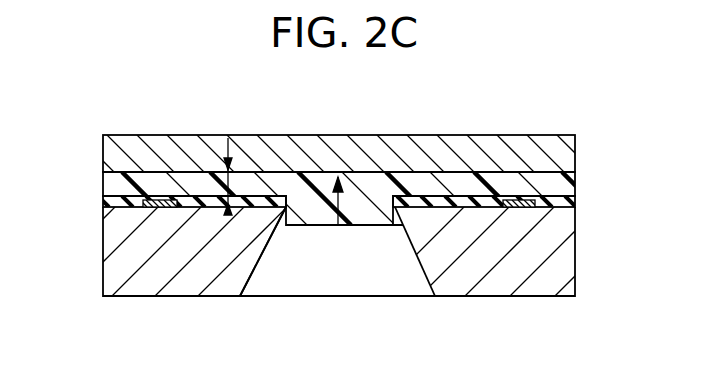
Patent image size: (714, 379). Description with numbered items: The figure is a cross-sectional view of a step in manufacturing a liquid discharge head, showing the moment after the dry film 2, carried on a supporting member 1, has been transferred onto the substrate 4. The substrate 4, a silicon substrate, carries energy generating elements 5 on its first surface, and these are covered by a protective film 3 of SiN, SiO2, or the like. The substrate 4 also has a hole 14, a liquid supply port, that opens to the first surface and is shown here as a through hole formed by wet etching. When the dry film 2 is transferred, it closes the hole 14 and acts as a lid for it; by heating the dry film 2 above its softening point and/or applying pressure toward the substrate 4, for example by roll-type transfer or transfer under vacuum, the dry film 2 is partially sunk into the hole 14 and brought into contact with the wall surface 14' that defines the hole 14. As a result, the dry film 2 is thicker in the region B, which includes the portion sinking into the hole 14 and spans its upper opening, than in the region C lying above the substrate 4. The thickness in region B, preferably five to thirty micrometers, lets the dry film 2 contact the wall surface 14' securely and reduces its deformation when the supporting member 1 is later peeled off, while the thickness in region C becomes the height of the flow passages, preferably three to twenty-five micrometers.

The supporting member 1 is at (560, 153).
The dry film 2 is at (560, 180).
The protective film 3 is at (560, 200).
The substrate 4 is at (557, 280).
The energy generating element 5 is at (525, 204).
The hole 14 is at (160, 265).
The wall surface 14' is at (160, 236).
The region above the hole B is at (338, 197).
The region above the substrate C is at (228, 180).